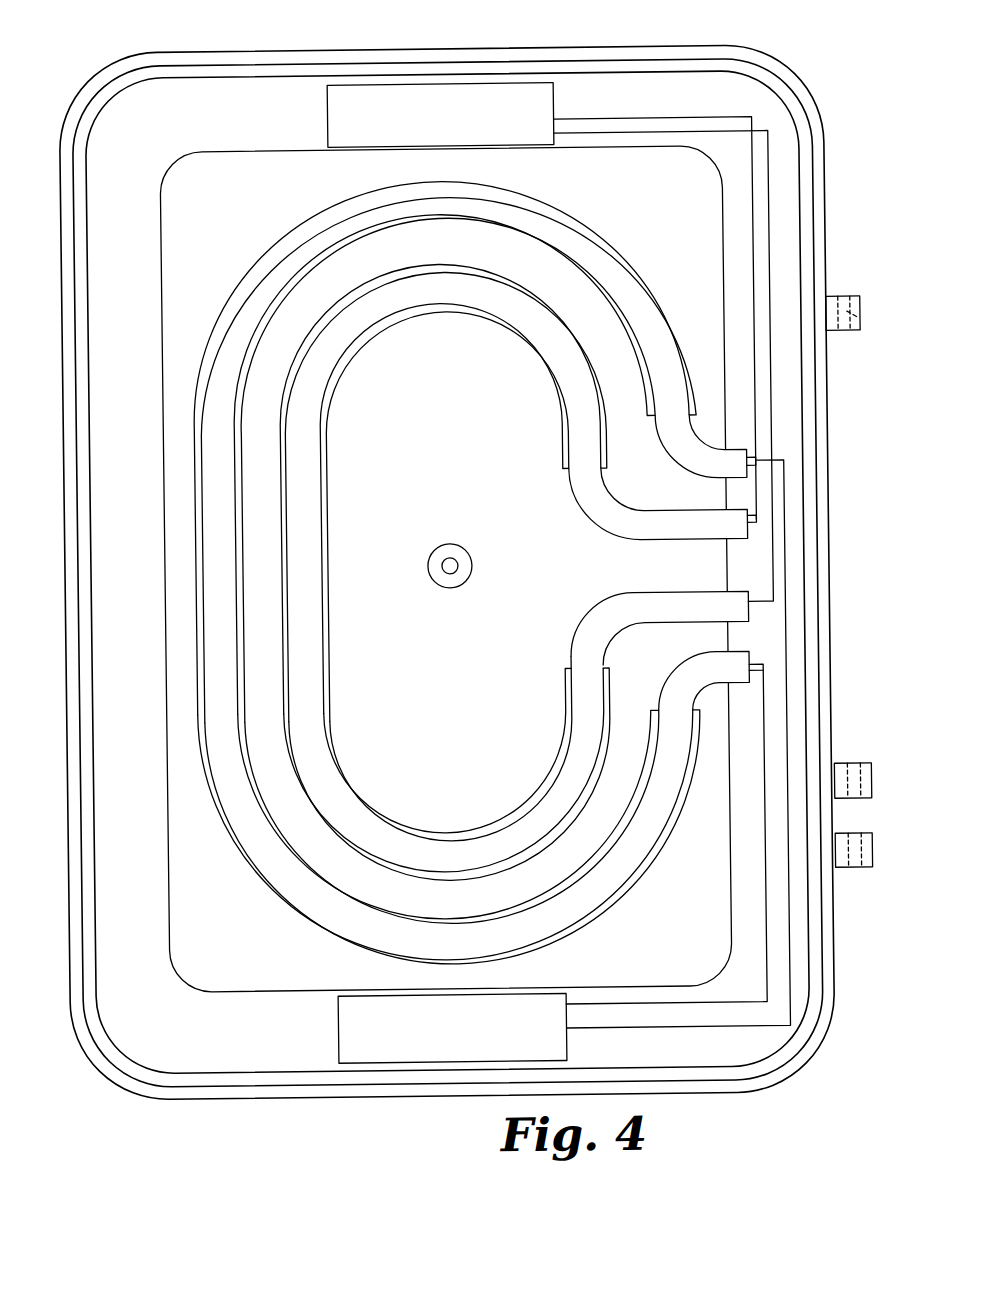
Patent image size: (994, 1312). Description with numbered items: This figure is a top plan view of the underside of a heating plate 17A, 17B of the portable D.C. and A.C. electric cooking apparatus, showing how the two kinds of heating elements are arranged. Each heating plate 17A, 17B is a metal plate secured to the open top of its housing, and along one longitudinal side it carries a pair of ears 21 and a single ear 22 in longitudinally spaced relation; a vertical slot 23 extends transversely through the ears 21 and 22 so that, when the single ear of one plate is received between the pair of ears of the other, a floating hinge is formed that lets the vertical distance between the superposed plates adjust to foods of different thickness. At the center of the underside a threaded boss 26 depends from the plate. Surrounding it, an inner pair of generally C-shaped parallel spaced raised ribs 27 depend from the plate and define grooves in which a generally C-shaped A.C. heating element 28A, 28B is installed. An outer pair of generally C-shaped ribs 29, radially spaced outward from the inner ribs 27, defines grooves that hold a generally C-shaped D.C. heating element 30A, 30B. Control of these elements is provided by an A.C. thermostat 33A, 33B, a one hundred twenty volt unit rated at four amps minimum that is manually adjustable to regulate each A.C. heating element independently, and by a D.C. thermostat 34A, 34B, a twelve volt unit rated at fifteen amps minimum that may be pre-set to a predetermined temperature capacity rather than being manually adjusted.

The heating plate 17A is at (473, 563).
The heating plate 17B is at (776, 58).
The pair of ears 21 is at (887, 800).
The single ear 22 is at (864, 304).
The vertical slot 23 is at (863, 766).
The central threaded boss 26 is at (458, 547).
The inner pair of ribs 27 is at (327, 556).
The A.C. heating element 28A is at (516, 572).
The A.C. heating element 28B is at (592, 612).
The outer pair of ribs 29 is at (197, 717).
The D.C. heating element 30A is at (440, 573).
The D.C. heating element 30B is at (677, 692).
The A.C. thermostat 33A is at (554, 798).
The A.C. thermostat 33B is at (380, 1061).
The D.C. thermostat 34A is at (549, 309).
The D.C. thermostat 34B is at (461, 84).